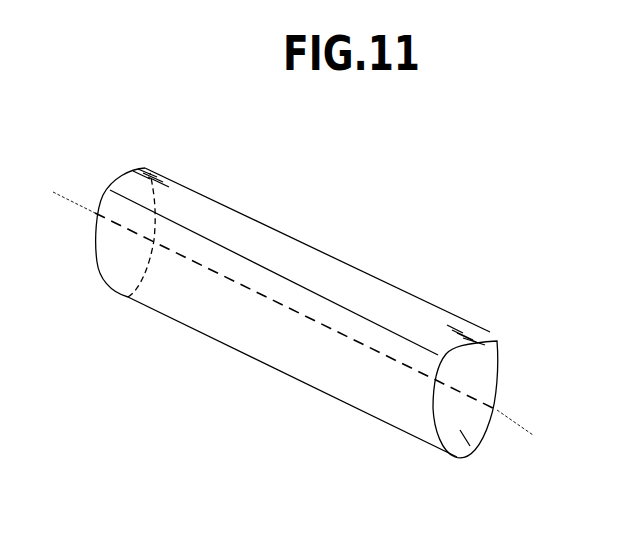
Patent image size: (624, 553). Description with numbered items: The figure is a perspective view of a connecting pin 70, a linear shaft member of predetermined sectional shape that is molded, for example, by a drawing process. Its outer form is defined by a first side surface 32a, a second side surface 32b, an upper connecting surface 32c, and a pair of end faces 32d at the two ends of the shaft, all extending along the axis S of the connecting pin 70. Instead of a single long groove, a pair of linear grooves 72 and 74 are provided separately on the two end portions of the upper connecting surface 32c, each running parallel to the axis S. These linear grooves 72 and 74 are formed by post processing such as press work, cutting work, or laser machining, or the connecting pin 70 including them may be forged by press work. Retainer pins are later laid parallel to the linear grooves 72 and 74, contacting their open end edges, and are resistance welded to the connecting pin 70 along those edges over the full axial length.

The connecting pin 70 is at (320, 310).
The linear groove 72 is at (145, 168).
The linear groove 74 is at (458, 325).
The first side surface 32a is at (490, 407).
The second side surface 32b is at (193, 303).
The upper connecting surface 32c is at (268, 225).
The end face 32d is at (470, 446).
The axis S is at (303, 322).